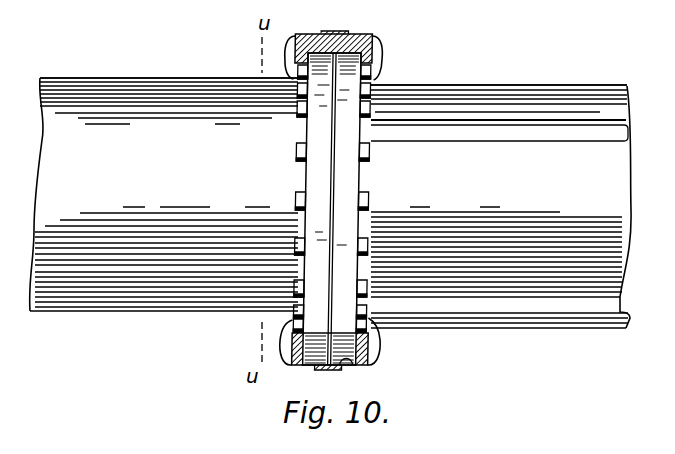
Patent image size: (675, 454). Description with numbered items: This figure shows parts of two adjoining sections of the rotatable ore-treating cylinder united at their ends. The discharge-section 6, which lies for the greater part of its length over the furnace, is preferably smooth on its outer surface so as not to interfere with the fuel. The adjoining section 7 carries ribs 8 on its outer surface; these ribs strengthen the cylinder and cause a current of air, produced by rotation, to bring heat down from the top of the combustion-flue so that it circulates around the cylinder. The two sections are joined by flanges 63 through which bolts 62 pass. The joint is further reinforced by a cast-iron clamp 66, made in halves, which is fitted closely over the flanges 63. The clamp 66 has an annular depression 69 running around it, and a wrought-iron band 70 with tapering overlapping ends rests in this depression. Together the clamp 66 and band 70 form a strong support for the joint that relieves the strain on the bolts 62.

The discharge-section 6 is at (164, 194).
The section 7 is at (501, 206).
The ribs 8 is at (491, 130).
The bolts 62 is at (371, 155).
The flanges 63 is at (352, 188).
The cast-iron clamp 66 is at (365, 34).
The annular depression 69 is at (350, 369).
The band 70 is at (314, 371).